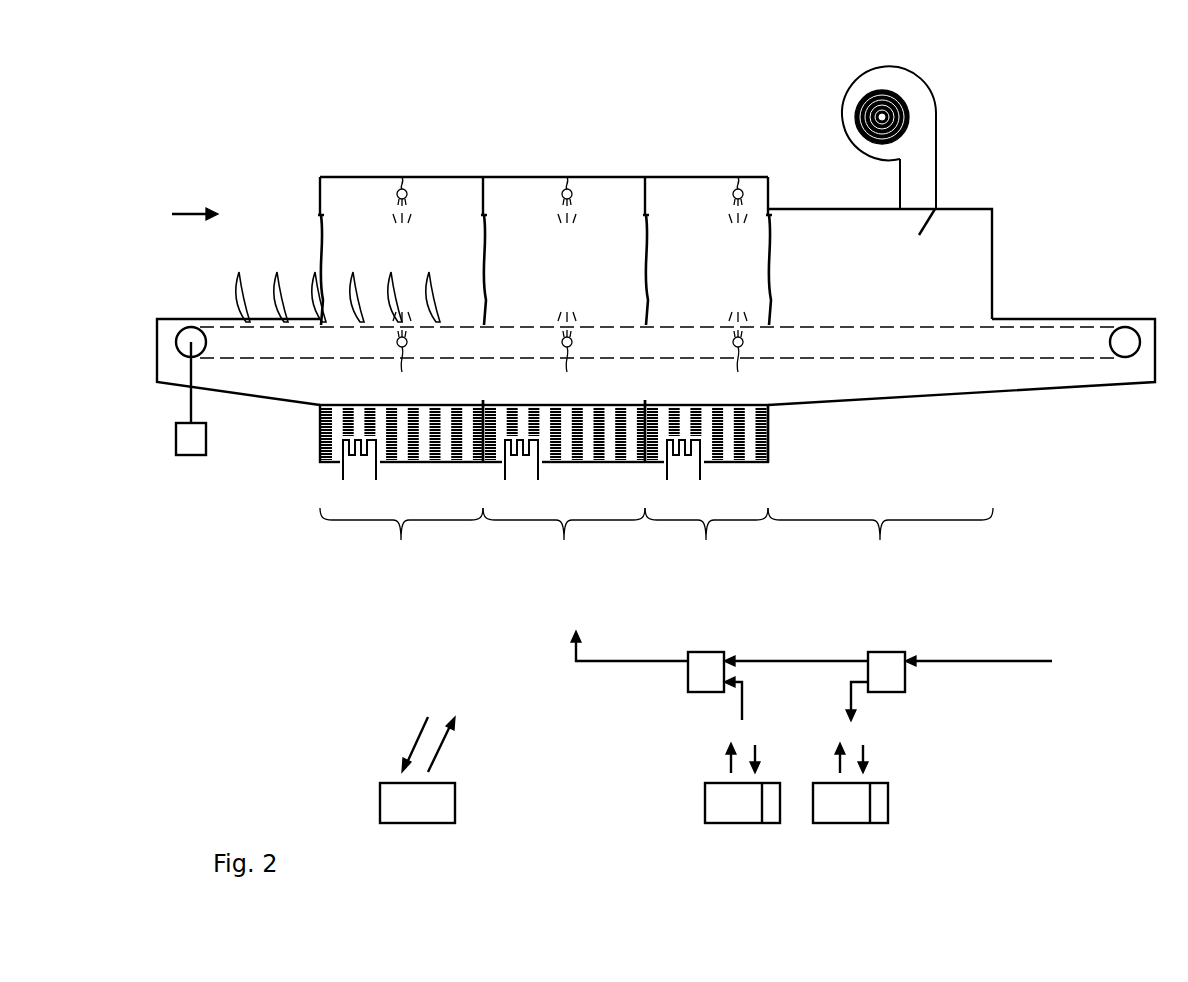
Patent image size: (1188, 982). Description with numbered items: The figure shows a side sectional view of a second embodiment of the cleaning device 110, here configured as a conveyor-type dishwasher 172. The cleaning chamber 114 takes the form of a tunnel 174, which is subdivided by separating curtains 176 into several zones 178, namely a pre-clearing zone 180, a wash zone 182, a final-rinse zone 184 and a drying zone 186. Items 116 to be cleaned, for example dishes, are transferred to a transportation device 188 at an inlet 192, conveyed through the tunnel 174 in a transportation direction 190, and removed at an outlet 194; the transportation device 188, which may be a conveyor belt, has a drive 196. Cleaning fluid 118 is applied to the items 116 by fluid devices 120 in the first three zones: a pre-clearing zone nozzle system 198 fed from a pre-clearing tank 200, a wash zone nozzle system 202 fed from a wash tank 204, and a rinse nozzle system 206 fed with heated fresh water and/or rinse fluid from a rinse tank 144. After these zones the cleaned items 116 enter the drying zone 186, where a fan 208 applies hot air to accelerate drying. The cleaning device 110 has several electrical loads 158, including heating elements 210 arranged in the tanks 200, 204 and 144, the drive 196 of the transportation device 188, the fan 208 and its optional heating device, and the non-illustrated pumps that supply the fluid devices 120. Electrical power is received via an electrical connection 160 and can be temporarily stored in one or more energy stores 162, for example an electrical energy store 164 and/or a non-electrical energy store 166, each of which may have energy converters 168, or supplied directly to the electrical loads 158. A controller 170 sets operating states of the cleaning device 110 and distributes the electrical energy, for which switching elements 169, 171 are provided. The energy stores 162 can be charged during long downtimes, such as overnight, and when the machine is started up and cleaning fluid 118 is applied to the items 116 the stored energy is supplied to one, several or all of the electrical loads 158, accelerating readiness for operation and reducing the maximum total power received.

The cleaning device 110 is at (656, 467).
The conveyor-type dishwasher 172 is at (284, 105).
The cleaning chamber 114 is at (601, 316).
The tunnel 174 is at (484, 176).
The fluid devices 120 is at (575, 269).
The pre-clearing zone nozzle system 198 is at (405, 269).
The wash zone nozzle system 202 is at (570, 269).
The rinse nozzle system 206 is at (745, 269).
The electrical loads 158 is at (601, 288).
The fan 208 is at (937, 115).
The heating elements 210 is at (357, 462).
The drive 196 is at (192, 455).
The transportation direction 190 is at (185, 212).
The items to be cleaned 116 is at (263, 276).
The separating curtains 176 is at (324, 250).
The inlet 192 is at (173, 318).
The outlet 194 is at (1110, 318).
The transportation device 188 is at (228, 389).
The pre-clearing tank 200 is at (320, 452).
The wash tank 204 is at (564, 457).
The rinse tank 144 is at (768, 450).
The cleaning fluid 118 is at (483, 462).
The zones 178 is at (656, 537).
The pre-clearing zone 180 is at (401, 537).
The wash zone 182 is at (564, 537).
The final-rinse zone 184 is at (706, 537).
The drying zone 186 is at (880, 537).
The switching element 171 is at (705, 660).
The switching element 169 is at (887, 660).
The electrical connection 160 is at (1035, 661).
The controller 170 is at (403, 817).
The energy stores 162 is at (796, 783).
The electrical energy store 164 is at (758, 817).
The non-electrical energy store 166 is at (866, 817).
The energy converters 168 is at (769, 823).